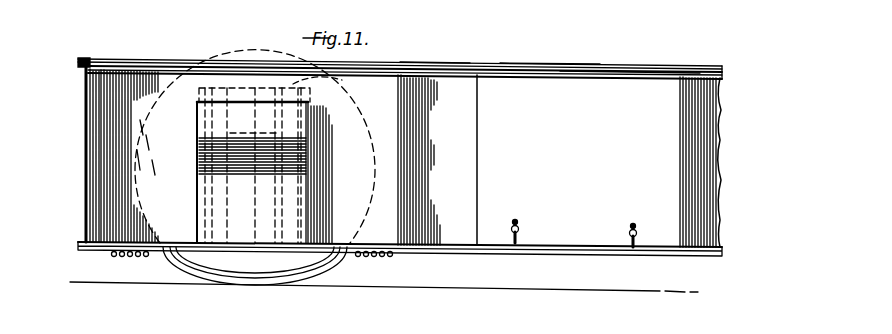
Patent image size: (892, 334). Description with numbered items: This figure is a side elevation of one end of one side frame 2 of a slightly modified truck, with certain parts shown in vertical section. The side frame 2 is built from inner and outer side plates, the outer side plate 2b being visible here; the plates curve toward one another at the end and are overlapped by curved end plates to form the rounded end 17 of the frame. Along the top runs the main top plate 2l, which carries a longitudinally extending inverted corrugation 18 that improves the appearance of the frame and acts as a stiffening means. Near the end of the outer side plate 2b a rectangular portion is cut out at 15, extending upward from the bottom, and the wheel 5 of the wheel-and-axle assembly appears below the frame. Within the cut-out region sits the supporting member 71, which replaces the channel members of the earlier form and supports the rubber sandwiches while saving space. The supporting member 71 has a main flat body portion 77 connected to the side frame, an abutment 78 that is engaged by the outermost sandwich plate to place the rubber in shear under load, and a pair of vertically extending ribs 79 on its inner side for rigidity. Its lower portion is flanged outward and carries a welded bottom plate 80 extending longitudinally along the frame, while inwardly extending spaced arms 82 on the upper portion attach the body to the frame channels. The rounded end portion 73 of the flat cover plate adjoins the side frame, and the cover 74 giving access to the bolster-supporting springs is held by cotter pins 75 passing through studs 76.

The side frame 2 is at (432, 60).
The outer side plate 2b is at (452, 93).
The main top plate 2l is at (528, 68).
The wheel 5 is at (328, 268).
The rectangular cut-out portion 15 is at (300, 167).
The rounded end 17 is at (86, 162).
The corrugation 18 is at (133, 59).
The supporting member 71 is at (249, 229).
The rounded end portion 73 is at (108, 212).
The cover plate 74 is at (597, 80).
The cotter pin 75 is at (516, 222).
The stud 76 is at (519, 230).
The flat body portion 77 is at (307, 148).
The abutment 78 is at (268, 58).
The vertically extending ribs 79 is at (212, 180).
The bottom plate 80 is at (258, 251).
The inwardly extending spaced arms 82 is at (331, 82).